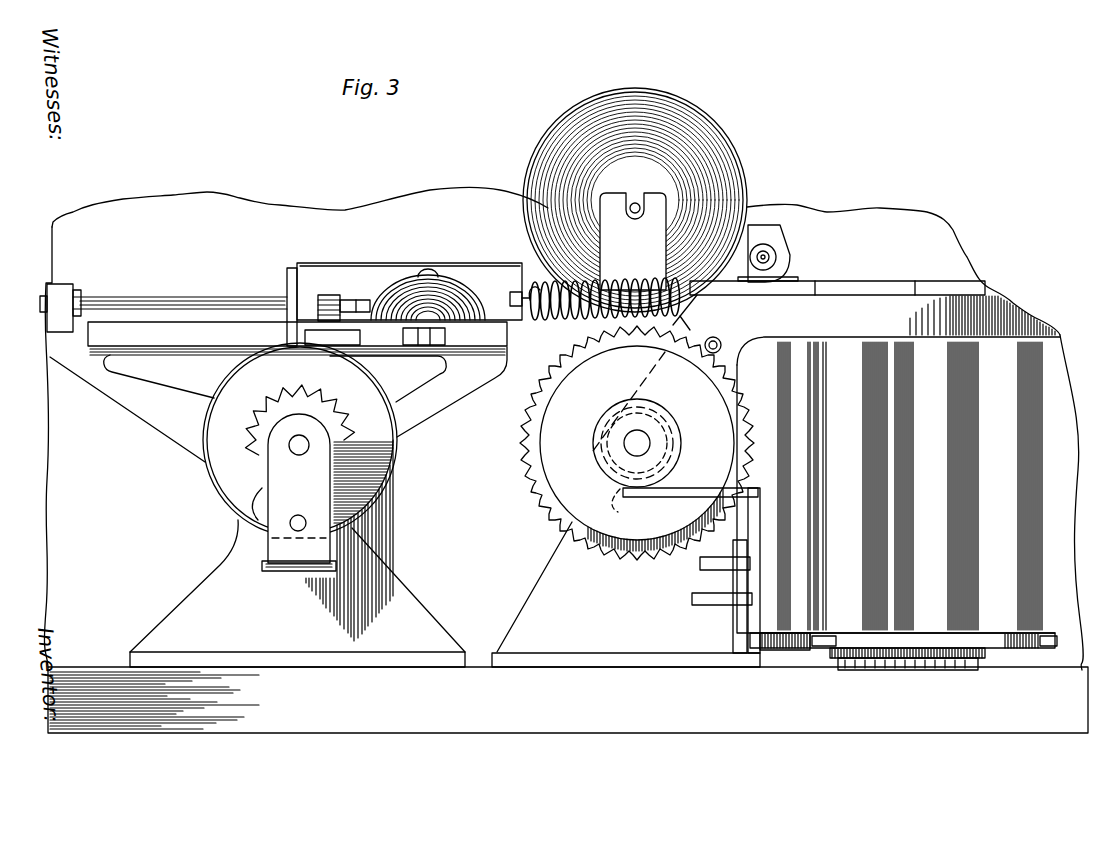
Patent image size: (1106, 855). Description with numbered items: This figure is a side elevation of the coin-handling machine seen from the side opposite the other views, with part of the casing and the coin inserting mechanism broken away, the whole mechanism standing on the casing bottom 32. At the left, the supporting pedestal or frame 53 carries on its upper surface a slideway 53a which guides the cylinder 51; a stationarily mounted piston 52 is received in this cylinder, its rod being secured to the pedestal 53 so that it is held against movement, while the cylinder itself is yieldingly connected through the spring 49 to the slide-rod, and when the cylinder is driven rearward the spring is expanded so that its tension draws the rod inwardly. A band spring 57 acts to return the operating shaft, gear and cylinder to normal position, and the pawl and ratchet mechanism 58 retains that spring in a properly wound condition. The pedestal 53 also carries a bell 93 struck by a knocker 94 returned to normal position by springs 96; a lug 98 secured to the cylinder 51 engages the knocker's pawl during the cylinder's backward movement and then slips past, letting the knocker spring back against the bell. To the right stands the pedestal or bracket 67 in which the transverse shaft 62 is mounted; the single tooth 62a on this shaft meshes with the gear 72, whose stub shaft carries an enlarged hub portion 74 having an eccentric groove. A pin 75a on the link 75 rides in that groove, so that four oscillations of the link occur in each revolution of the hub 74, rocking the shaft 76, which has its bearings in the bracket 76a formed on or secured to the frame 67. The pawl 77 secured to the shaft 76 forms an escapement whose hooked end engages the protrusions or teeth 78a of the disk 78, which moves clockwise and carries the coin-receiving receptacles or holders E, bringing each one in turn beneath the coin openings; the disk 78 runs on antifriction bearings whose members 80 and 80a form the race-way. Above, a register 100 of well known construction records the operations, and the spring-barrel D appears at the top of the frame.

The bottom 32 is at (566, 460).
The slideway 53a is at (190, 322).
The piston 52 is at (287, 290).
The cylinder 51 is at (342, 270).
The springs 96 is at (318, 308).
The knocker 94 is at (356, 300).
The bell 93 is at (462, 302).
The lug 98 is at (514, 292).
The spring drum D is at (550, 162).
The pedestal or bracket 67 is at (613, 421).
The spring 49 is at (541, 330).
The register 100 is at (784, 240).
The shaft 62 is at (717, 338).
The single tooth 62a is at (747, 355).
The coin-receiving receptacles or holders E is at (782, 482).
The gear 72 is at (533, 478).
The enlarged hub portion 74 is at (666, 412).
The link 75 is at (692, 488).
The pin 75a is at (622, 509).
The shaft 76 is at (745, 580).
The bracket 76a is at (712, 604).
The pawl 77 is at (773, 652).
The disk 78 is at (1040, 633).
The protrusions or teeth 78a is at (826, 647).
The member of antifriction bearing 80 is at (867, 660).
The member of antifriction bearing 80a is at (918, 670).
The band spring 57 is at (398, 470).
The pawl and ratchet mechanism 58 is at (256, 491).
The pedestal or frame 53 is at (362, 585).